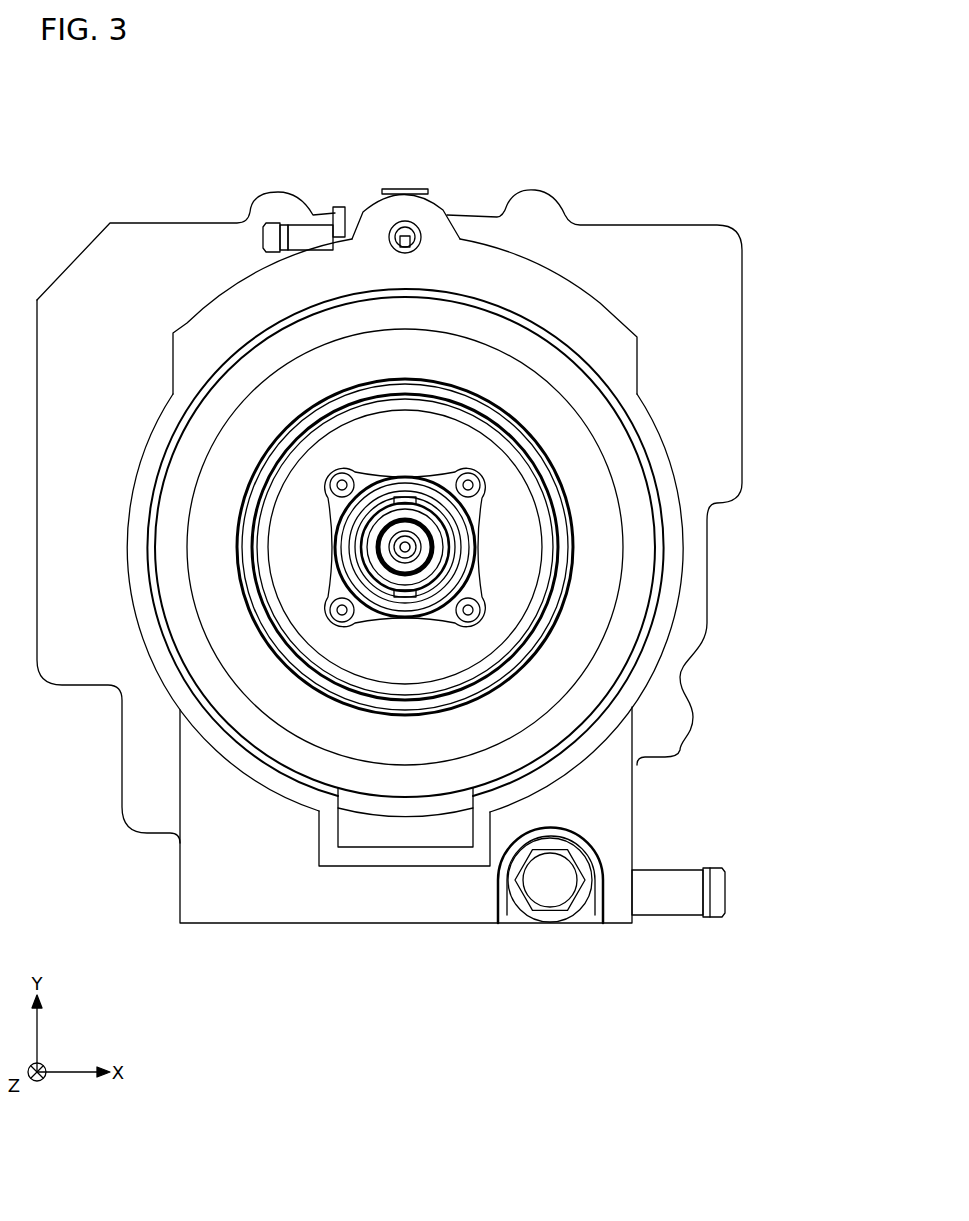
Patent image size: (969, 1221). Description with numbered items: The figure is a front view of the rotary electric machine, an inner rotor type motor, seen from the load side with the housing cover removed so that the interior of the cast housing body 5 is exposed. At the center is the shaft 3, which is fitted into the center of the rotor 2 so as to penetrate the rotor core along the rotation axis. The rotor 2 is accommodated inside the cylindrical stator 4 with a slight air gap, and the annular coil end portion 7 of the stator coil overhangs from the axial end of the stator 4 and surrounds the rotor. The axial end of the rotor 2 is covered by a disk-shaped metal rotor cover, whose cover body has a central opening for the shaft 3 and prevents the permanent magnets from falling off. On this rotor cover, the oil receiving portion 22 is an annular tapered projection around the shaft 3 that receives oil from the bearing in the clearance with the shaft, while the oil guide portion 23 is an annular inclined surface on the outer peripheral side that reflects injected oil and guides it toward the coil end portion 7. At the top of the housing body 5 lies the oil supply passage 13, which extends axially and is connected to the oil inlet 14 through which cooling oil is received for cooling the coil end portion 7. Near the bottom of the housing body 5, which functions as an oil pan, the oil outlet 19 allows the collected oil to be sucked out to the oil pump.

The rotor 2 is at (575, 551).
The shaft 3 is at (388, 550).
The stator 4 is at (620, 413).
The housing body 5 is at (593, 290).
The coil end portion 7 is at (540, 372).
The oil supply passage 13 is at (420, 228).
The oil inlet 14 is at (293, 222).
The oil outlet 19 is at (665, 917).
The oil receiving portion 22 is at (382, 507).
The oil guide portion 23 is at (541, 498).